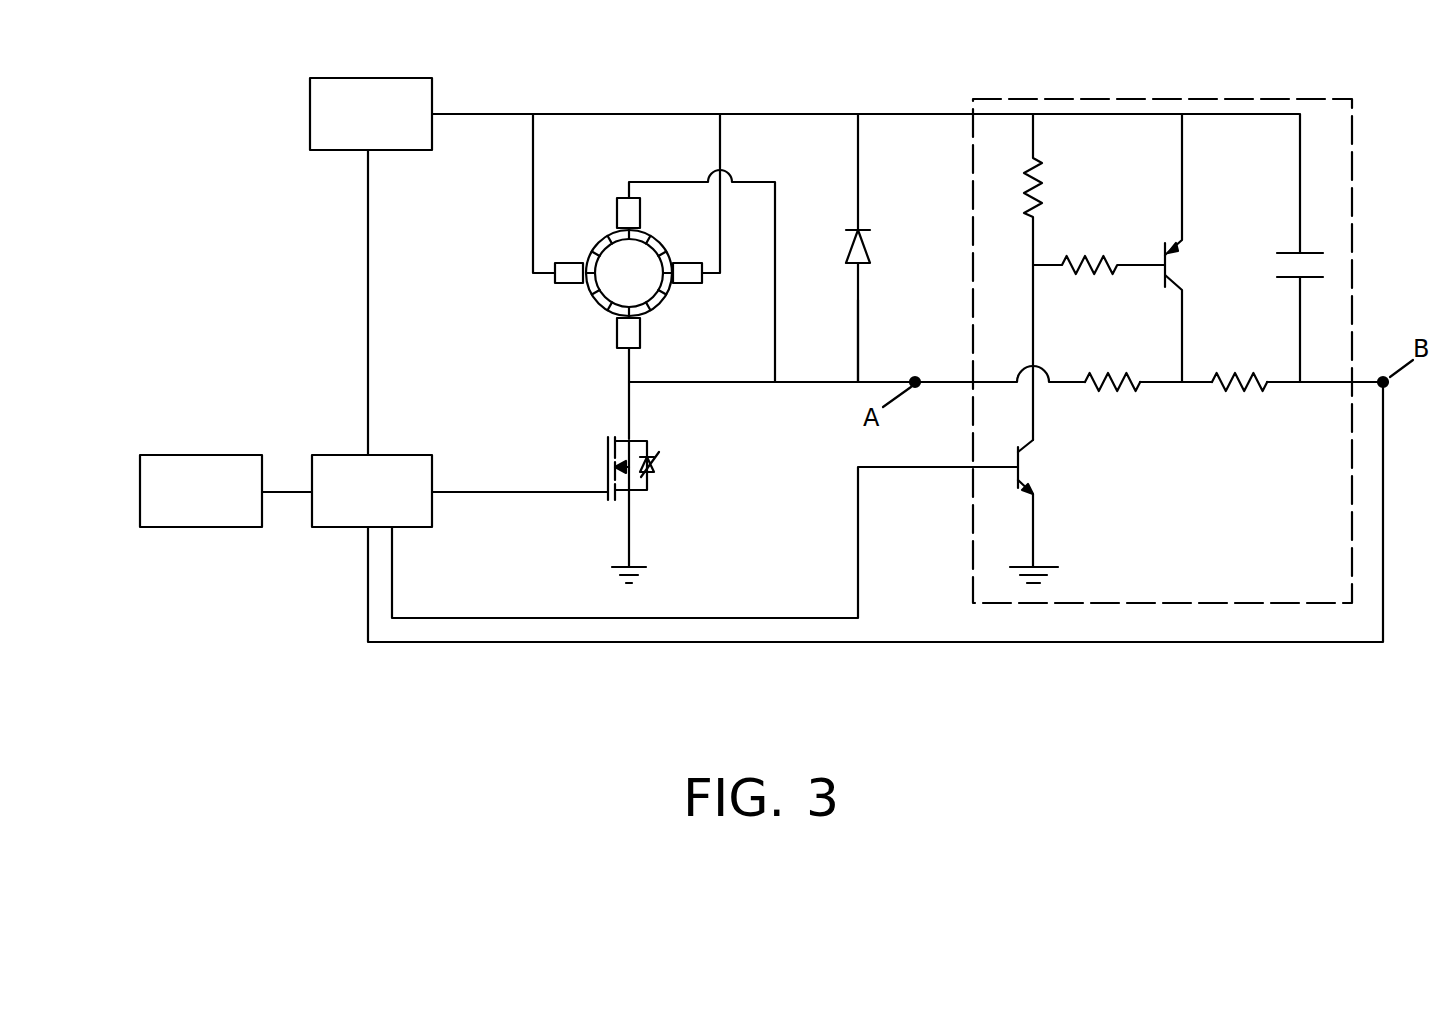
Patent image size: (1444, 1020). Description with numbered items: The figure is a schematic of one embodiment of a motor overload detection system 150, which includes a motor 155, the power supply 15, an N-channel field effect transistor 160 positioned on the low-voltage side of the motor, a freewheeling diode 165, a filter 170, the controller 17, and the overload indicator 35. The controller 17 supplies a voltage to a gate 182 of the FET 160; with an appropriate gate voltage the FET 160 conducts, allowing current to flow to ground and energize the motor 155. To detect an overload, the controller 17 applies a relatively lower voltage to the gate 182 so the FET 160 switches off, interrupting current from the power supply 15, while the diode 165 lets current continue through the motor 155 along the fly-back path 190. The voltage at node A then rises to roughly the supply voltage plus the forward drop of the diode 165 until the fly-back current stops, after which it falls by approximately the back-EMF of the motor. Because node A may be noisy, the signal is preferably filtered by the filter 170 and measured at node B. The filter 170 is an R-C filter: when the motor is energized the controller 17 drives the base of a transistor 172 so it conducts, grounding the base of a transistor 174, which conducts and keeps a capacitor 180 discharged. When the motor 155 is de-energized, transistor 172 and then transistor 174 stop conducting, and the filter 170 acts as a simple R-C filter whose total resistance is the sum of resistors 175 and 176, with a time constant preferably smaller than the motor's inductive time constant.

The power supply 15 is at (333, 147).
The controller 17 is at (345, 522).
The overload indicator 35 is at (172, 523).
The motor overload detection system 150 is at (314, 707).
The motor 155 is at (617, 300).
The N-channel field effect transistor 160 is at (664, 467).
The freewheeling diode 165 is at (860, 240).
The filter 170 is at (1280, 563).
The transistor 172 is at (1036, 474).
The transistor 174 is at (1180, 263).
The resistor 175 is at (1250, 394).
The resistor 176 is at (1122, 392).
The capacitor 180 is at (1297, 281).
The gate 182 is at (582, 492).
The fly-back path 190 is at (858, 337).